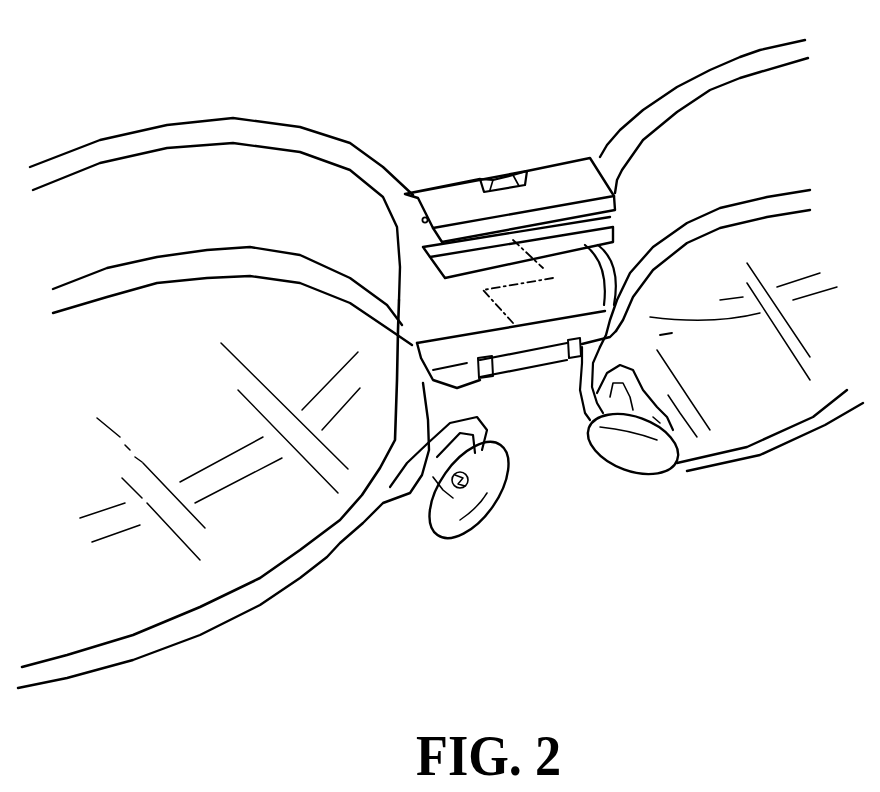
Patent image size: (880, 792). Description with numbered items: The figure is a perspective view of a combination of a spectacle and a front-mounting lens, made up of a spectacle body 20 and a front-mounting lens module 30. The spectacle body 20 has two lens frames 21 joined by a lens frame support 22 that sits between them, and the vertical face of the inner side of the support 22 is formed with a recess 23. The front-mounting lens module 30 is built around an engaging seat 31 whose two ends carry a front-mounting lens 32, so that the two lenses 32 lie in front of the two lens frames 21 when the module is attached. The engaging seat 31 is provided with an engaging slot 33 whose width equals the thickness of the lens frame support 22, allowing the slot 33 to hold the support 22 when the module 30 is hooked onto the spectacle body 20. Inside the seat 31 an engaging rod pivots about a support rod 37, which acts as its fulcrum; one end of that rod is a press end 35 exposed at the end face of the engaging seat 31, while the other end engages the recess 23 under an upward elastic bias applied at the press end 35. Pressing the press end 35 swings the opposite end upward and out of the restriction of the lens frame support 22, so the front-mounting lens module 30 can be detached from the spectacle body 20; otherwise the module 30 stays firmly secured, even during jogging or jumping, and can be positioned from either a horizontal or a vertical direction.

The spectacle body 20 is at (577, 478).
The lens frame 21 is at (239, 602).
The lens frame support 22 is at (487, 338).
The recess 23 is at (572, 360).
The front-mounting lens module 30 is at (412, 163).
The engaging seat 31 is at (575, 181).
The front-mounting lens 32 is at (188, 133).
The engaging slot 33 is at (603, 232).
The press end 35 is at (503, 171).
The support rod 37 is at (421, 221).